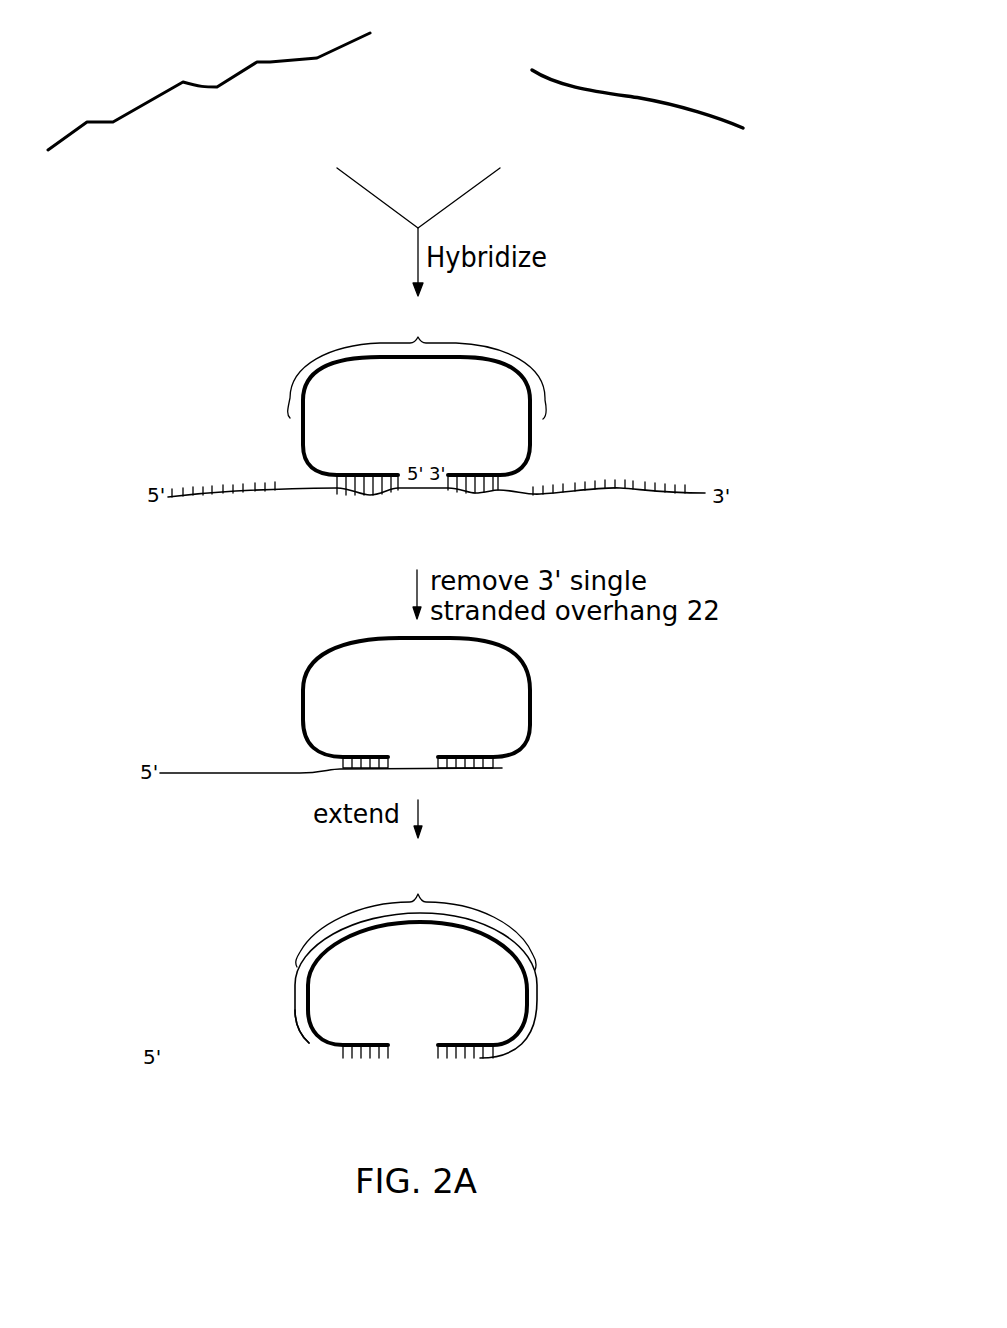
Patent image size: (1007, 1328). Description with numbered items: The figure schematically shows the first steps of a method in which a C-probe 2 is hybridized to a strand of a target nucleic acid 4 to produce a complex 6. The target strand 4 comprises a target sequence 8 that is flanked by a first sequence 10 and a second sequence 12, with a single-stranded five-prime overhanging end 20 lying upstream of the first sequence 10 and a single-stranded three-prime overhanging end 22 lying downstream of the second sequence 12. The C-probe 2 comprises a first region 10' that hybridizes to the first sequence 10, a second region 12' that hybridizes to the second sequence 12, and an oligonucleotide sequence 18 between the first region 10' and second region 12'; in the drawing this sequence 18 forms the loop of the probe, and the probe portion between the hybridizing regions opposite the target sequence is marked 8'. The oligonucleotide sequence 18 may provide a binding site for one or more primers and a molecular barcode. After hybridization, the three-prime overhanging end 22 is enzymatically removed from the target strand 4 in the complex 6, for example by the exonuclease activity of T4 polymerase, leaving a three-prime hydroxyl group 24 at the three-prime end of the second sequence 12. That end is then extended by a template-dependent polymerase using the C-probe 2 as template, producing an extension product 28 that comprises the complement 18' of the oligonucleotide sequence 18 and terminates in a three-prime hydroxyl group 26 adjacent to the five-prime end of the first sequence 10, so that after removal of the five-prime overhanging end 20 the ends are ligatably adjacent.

The C-probe 2 is at (667, 33).
The target nucleic acid 4 is at (187, 33).
The complex 6 is at (531, 345).
The target sequence 8 is at (315, 598).
The intervening region of second nucleic acid 8' is at (633, 136).
The first sequence 10 is at (258, 610).
The first region 10' is at (460, 268).
The second sequence 12 is at (383, 562).
The second region 12' is at (594, 293).
The oligonucleotide sequence 18 is at (416, 380).
The complement of oligonucleotide sequence 18' is at (416, 920).
The 5' overhanging end 20 is at (277, 505).
The 3' overhanging end 22 is at (685, 505).
The 3' hydroxyl group 24 is at (517, 783).
The 3' hydroxyl group 26 is at (309, 1049).
The extension product 28 is at (536, 980).